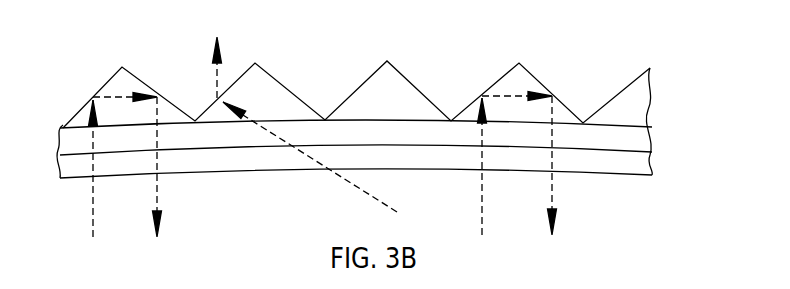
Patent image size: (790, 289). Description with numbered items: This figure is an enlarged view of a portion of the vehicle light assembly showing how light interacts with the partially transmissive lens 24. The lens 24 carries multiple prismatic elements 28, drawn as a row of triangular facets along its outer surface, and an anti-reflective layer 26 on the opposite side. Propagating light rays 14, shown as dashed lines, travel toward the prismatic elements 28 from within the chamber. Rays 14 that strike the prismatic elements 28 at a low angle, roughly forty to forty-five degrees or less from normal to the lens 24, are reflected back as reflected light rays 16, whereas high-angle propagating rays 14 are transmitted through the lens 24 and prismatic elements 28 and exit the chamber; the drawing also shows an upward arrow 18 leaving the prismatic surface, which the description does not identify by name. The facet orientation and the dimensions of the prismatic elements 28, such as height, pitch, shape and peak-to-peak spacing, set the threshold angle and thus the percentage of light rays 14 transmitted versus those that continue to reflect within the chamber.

The propagating light rays 14 is at (122, 93).
The reflected light rays 16 is at (158, 183).
The reflected light ray 18 is at (218, 80).
The partially transmissive lens 24 is at (665, 67).
The anti-reflective layer 26 is at (55, 169).
The prismatic elements 28 is at (105, 93).